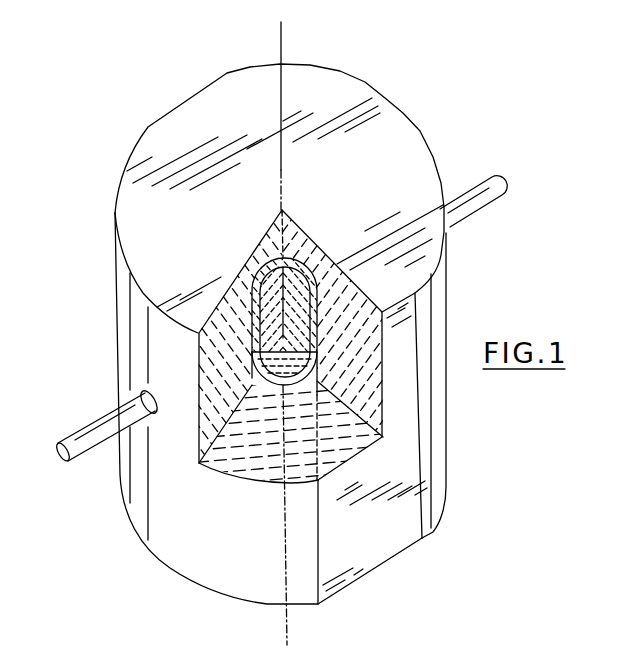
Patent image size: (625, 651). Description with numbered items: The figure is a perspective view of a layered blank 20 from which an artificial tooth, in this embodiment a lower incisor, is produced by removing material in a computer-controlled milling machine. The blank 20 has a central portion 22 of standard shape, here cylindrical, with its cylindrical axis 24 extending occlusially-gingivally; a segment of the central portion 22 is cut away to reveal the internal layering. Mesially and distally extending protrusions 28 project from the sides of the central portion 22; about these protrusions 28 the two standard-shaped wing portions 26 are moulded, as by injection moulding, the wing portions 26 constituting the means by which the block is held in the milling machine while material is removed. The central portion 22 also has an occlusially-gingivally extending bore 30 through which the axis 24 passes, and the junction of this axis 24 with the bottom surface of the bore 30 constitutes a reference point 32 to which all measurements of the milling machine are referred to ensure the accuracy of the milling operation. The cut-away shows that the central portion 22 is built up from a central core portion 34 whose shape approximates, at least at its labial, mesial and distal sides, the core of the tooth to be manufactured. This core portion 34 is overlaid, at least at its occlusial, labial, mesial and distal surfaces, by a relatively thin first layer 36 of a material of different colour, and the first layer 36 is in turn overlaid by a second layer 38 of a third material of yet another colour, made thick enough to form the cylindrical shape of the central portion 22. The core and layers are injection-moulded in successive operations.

The blank 20 is at (101, 118).
The central portion 22 is at (383, 131).
The cylindrical axis 24 is at (283, 36).
The wing portions 26 is at (471, 647).
The protrusions 28 is at (80, 436).
The bore 30 is at (300, 358).
The reference point 32 is at (241, 468).
The central core portion 34 is at (268, 272).
The first layer 36 is at (258, 258).
The second layer 38 is at (236, 283).